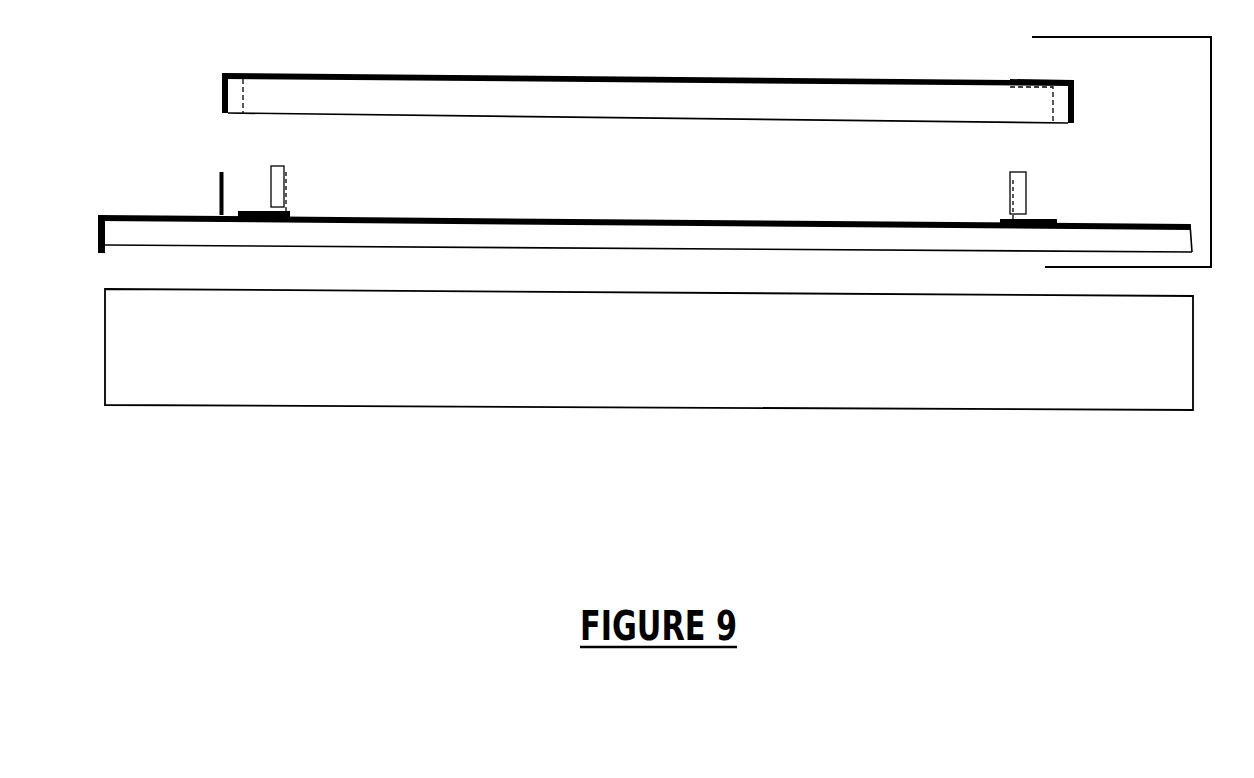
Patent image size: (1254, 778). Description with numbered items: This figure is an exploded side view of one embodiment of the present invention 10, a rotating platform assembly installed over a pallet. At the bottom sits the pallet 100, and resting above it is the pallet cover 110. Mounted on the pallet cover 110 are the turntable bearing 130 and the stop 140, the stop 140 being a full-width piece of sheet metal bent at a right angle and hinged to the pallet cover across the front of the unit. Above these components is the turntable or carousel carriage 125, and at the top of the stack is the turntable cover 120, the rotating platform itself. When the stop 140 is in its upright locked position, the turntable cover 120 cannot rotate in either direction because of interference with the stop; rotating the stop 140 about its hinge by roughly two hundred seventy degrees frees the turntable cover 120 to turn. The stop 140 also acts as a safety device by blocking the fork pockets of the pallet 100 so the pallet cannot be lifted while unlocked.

The embodiment of the present invention 10 is at (1214, 157).
The pallet 100 is at (118, 296).
The pallet cover 110 is at (122, 235).
The turntable cover 120 is at (236, 75).
The turntable or carousel carriage 125 is at (240, 122).
The turntable bearing 130 is at (285, 190).
The stop 140 is at (220, 172).